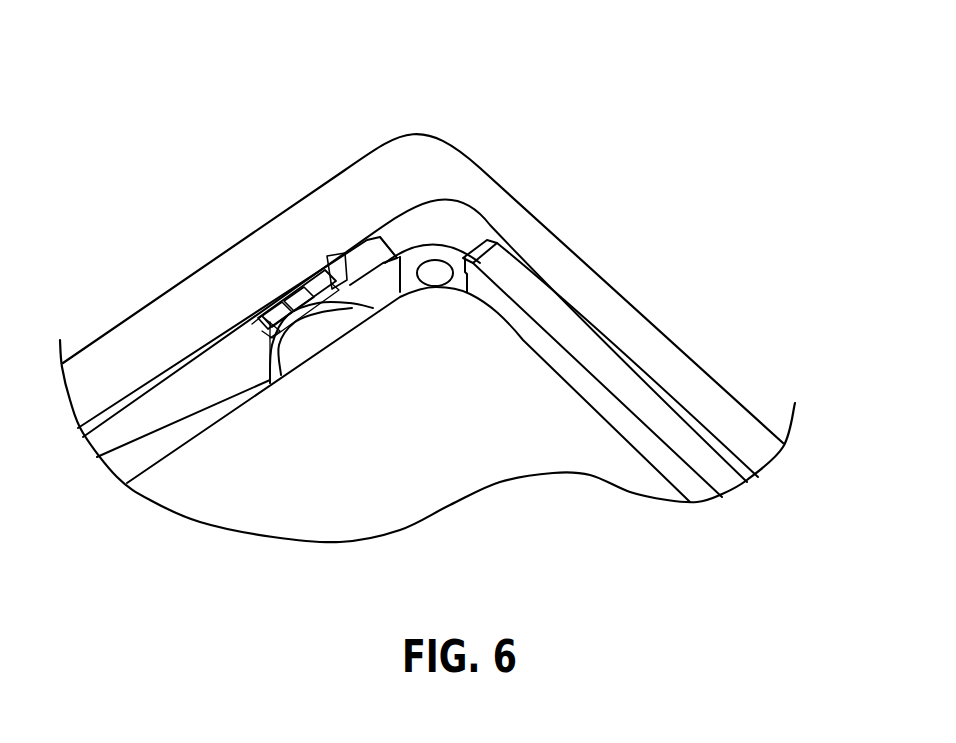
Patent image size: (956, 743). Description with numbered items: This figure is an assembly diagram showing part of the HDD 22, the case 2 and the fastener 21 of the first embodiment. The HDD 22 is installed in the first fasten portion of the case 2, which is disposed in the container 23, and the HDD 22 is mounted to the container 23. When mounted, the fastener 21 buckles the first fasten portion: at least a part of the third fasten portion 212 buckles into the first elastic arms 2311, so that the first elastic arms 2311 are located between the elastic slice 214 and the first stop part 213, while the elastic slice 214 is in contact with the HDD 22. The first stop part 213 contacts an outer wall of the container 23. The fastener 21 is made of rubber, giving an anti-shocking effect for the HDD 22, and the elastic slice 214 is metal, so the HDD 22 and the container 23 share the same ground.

The case 2 is at (575, 267).
The fastener 21 is at (250, 75).
The third fasten portion 212 is at (298, 300).
The first stop part 213 is at (277, 293).
The elastic slice 214 is at (335, 268).
The HDD 22 is at (530, 442).
The container 23 is at (515, 315).
The first elastic arms 2311 is at (277, 310).